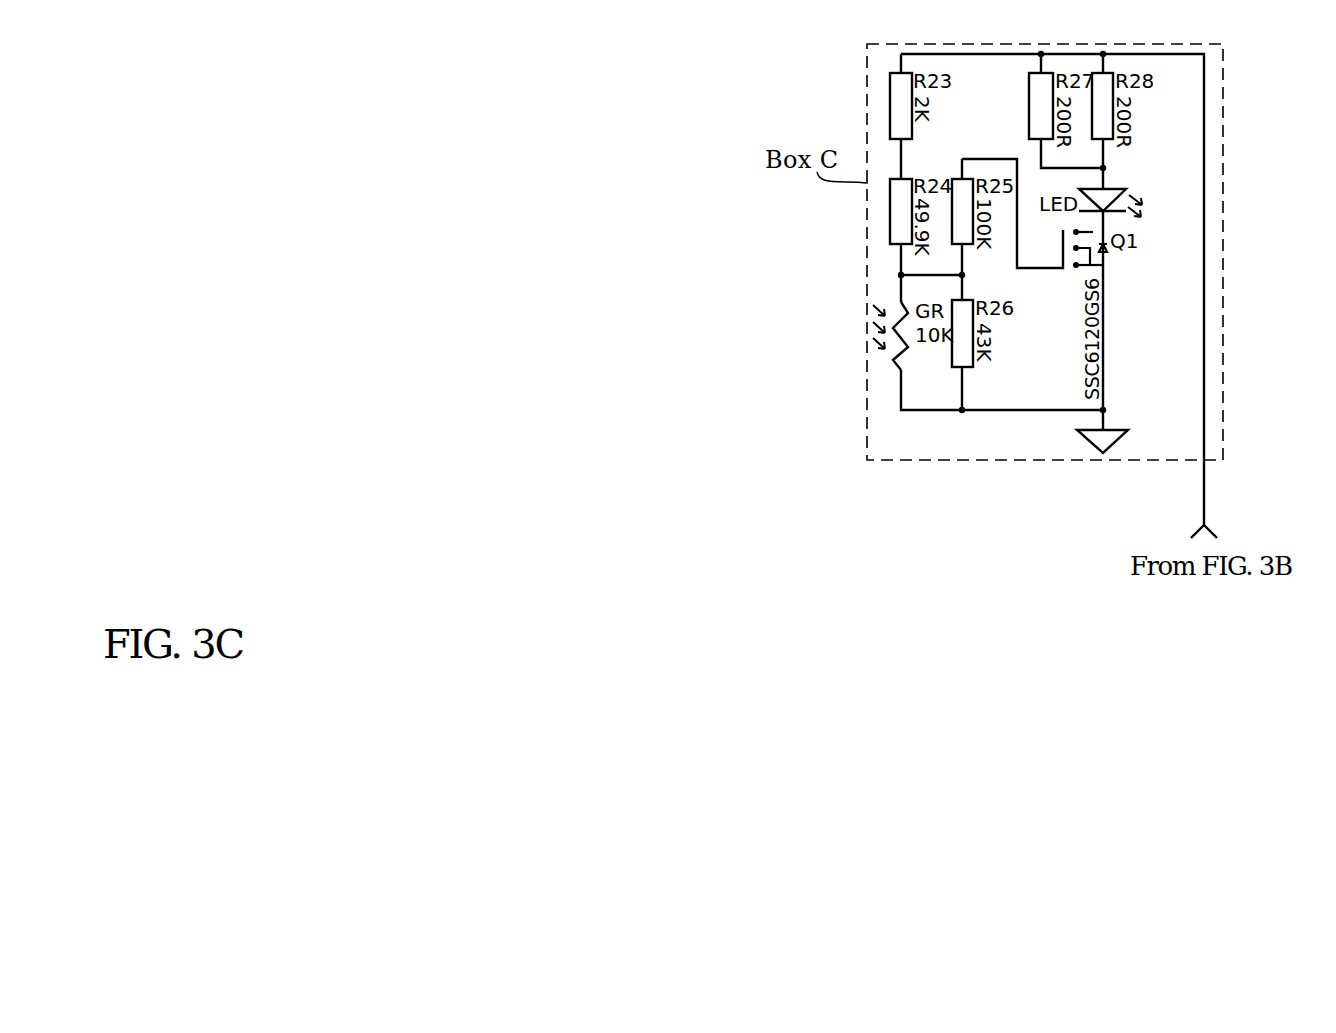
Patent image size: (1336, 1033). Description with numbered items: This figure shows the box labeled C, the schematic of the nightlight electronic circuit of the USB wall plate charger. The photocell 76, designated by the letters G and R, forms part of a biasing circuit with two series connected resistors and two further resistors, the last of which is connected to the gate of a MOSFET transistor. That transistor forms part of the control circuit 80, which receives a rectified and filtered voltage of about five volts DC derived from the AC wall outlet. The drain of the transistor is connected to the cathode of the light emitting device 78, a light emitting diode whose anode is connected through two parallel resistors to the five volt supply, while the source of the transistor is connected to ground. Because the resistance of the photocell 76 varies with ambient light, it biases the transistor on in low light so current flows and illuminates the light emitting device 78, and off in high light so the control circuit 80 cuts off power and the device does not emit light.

The photocell 76 is at (888, 360).
The light emitting device 78 is at (1147, 212).
The control circuit 80 is at (1165, 267).